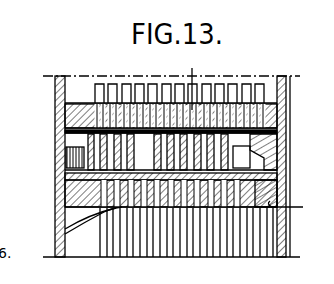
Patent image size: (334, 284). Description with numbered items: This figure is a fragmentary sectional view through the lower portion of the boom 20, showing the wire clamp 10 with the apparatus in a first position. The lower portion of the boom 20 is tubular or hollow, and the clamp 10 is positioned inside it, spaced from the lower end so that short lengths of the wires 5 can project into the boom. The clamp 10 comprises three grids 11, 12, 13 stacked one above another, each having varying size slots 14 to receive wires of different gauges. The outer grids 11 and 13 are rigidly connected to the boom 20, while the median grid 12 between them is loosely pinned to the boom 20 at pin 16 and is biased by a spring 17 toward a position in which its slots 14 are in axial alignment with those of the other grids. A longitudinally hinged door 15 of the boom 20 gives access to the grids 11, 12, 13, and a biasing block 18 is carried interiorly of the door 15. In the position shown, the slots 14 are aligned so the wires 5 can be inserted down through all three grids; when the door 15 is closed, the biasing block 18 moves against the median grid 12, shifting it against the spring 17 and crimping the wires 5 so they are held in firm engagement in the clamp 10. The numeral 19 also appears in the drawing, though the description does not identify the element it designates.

The wires 5 is at (126, 75).
The clamp 10 is at (58, 130).
The grid 11 is at (56, 110).
The median grid 12 is at (266, 150).
The grid 13 is at (279, 192).
The slots 14 is at (50, 235).
The door 15 is at (290, 248).
The pin 16 is at (58, 195).
The spring 17 is at (66, 156).
The biasing block 18 is at (286, 129).
The pole region 19 is at (134, 164).
The boom 20 is at (293, 108).